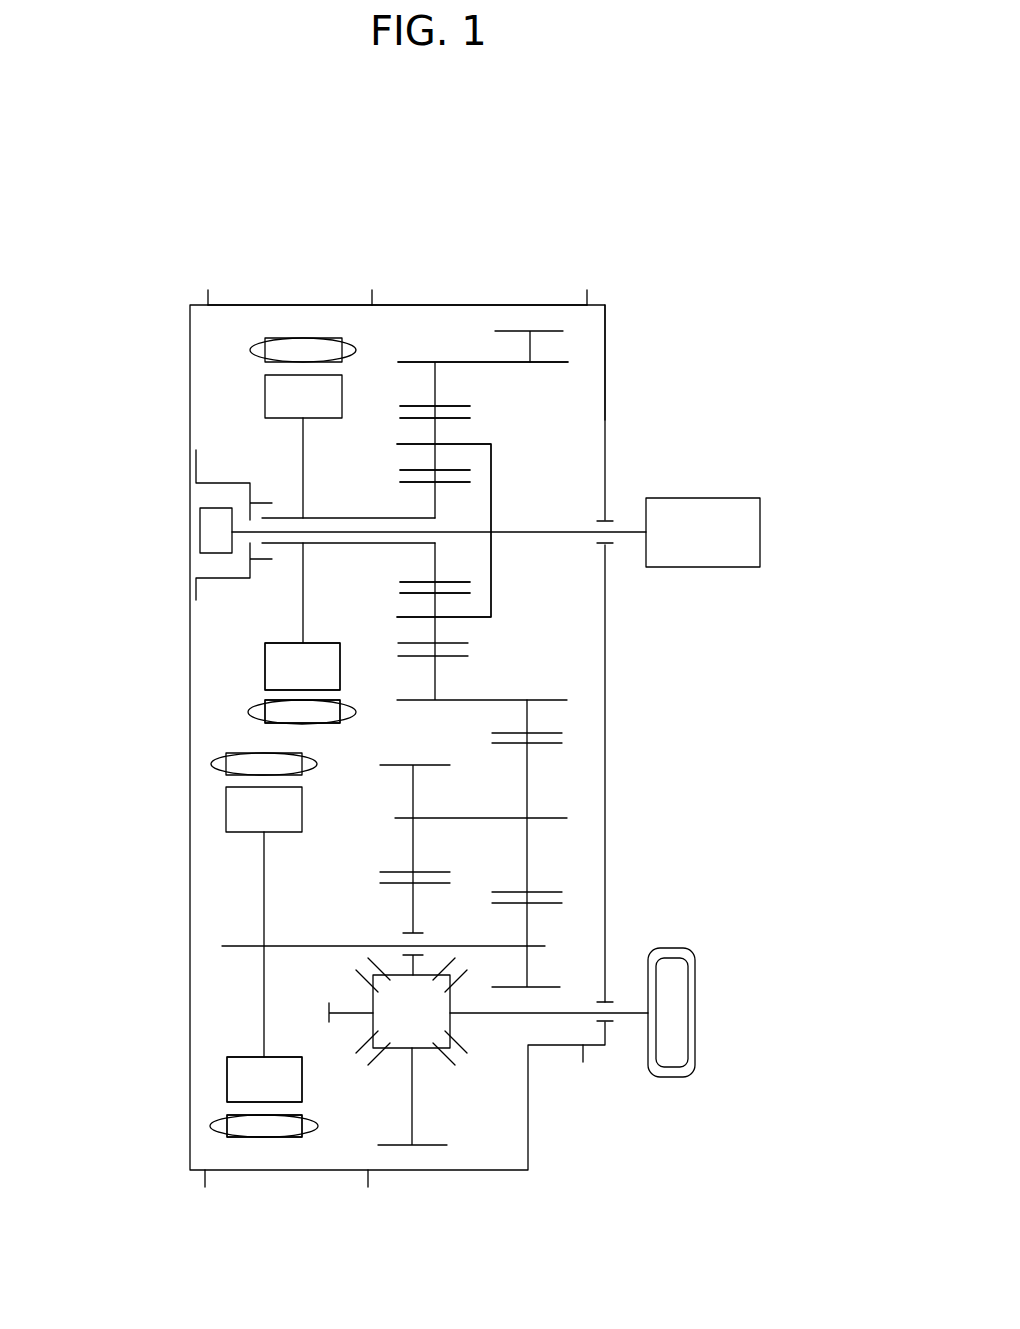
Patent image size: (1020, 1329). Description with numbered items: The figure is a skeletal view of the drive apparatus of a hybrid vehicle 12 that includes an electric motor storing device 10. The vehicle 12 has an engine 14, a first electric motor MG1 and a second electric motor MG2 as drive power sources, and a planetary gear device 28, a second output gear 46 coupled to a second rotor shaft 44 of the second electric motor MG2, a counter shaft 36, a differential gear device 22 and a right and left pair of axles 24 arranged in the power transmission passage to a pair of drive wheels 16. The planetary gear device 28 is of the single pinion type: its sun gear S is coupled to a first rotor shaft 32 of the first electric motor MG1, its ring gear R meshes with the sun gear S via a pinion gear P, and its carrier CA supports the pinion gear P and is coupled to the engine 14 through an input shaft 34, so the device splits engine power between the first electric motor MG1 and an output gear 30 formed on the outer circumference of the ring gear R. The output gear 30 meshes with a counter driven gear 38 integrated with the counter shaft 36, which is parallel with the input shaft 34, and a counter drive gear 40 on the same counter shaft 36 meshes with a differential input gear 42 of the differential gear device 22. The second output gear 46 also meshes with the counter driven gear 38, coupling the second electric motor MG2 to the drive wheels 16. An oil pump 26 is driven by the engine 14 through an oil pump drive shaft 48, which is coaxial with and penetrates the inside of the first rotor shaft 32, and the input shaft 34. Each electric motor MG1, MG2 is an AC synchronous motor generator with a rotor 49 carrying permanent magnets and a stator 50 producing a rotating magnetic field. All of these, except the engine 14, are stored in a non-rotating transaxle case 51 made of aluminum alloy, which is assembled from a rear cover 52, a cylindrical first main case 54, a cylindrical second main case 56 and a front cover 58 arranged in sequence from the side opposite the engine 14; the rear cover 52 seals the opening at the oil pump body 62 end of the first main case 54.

The electric motor storing device 10 is at (155, 462).
The hybrid vehicle 12 is at (650, 168).
The engine 14 is at (745, 512).
The drive wheels 16 is at (672, 962).
The differential gear device 22 is at (480, 1060).
The axles 24 is at (625, 1016).
The oil pump 26 is at (213, 508).
The planetary gear device 28 is at (445, 333).
The output gear 30 is at (540, 335).
The first rotor shaft 32 is at (300, 512).
The input shaft 34 is at (530, 530).
The counter shaft 36 is at (548, 818).
The counter driven gear 38 is at (545, 892).
The counter drive gear 40 is at (395, 768).
The differential input gear 42 is at (432, 1145).
The second rotor shaft 44 is at (240, 946).
The second output gear 46 is at (548, 987).
The oil pump drive shaft 48 is at (270, 545).
The rotor 49 is at (268, 648).
The stator 50 is at (330, 722).
The transaxle case 51 is at (162, 232).
The rear cover 52 is at (190, 352).
The first main case 54 is at (292, 305).
The second main case 56 is at (530, 305).
The front cover 58 is at (605, 345).
The oil pump body 62 is at (237, 460).
The ring gear R is at (460, 405).
The pinion gear P is at (410, 470).
The sun gear S is at (408, 580).
The carrier CA is at (480, 618).
The first electric motor MG1 is at (238, 388).
The second electric motor MG2 is at (207, 1082).